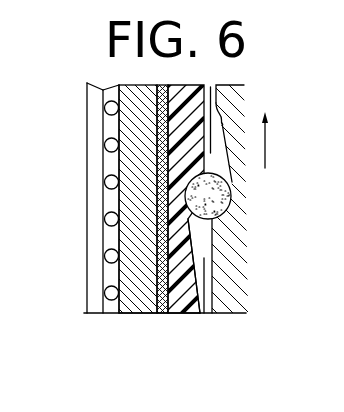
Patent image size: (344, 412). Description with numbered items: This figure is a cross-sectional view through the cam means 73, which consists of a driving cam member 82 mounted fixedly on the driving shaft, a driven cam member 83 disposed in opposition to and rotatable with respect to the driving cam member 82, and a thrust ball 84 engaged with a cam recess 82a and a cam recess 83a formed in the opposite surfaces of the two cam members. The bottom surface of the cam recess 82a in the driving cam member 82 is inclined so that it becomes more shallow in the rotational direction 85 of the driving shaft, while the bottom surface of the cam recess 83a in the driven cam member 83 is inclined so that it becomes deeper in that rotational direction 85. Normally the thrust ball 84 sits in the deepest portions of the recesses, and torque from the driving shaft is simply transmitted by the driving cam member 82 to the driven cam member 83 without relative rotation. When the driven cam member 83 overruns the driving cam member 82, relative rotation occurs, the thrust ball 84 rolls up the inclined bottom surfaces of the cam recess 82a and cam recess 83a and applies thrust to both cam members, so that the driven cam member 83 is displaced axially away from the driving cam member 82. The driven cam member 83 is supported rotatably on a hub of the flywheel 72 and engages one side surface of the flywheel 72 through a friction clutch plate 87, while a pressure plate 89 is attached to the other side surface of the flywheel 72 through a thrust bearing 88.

The flywheel 72 is at (139, 313).
The cam means 73 is at (208, 320).
The driving cam member 82 is at (238, 313).
The cam recess 82a is at (222, 121).
The driven cam member 83 is at (188, 313).
The cam recess 83a is at (193, 247).
The thrust ball 84 is at (226, 210).
The rotational direction 85 is at (266, 164).
The friction clutch plate 87 is at (160, 313).
The thrust bearing 88 is at (104, 103).
The pressure plate 89 is at (88, 176).